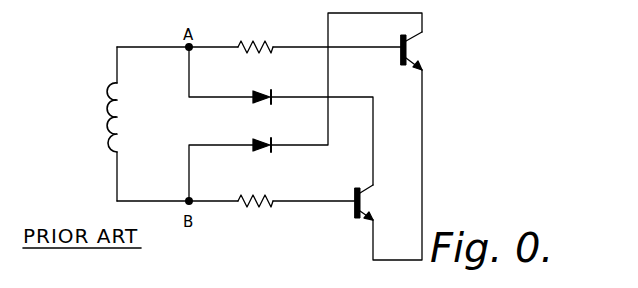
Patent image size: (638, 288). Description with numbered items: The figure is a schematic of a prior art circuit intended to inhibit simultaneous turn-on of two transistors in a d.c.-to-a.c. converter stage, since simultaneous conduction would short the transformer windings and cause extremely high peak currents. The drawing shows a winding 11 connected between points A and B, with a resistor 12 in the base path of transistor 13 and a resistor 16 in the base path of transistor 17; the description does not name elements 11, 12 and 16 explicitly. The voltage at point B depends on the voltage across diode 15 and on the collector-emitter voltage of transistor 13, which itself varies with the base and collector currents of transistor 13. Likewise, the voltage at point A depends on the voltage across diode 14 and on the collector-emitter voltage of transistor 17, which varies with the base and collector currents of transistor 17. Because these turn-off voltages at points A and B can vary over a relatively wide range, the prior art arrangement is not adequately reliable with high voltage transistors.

The coil / inductive winding 11 is at (102, 117).
The resistor 12 is at (255, 39).
The transistor 13 is at (399, 55).
The diode 14 is at (262, 88).
The diode 15 is at (262, 158).
The resistor 16 is at (255, 213).
The transistor 17 is at (354, 213).